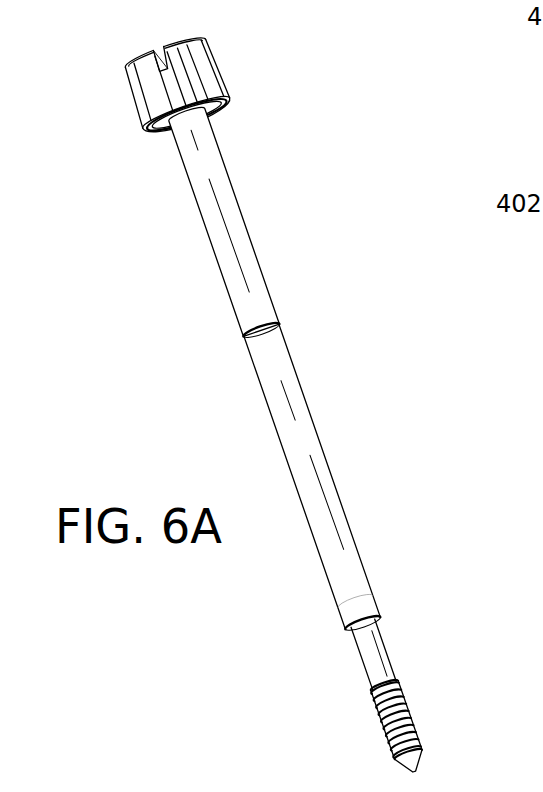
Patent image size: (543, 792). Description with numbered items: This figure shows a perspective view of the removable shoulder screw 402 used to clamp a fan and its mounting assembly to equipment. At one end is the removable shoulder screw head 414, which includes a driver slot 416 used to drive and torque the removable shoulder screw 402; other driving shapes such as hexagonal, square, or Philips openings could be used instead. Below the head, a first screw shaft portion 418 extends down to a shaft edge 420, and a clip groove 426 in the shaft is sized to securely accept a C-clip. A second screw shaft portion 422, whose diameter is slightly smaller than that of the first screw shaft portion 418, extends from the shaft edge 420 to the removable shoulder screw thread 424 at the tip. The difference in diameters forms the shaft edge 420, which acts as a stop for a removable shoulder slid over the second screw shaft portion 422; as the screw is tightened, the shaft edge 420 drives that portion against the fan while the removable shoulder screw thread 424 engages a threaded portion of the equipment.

The removable shoulder screw 402 is at (146, 246).
The removable shoulder screw head 414 is at (212, 80).
The driver slot 416 is at (158, 50).
The first screw shaft portion 418 is at (323, 470).
The shaft edge 420 is at (350, 627).
The second screw shaft portion 422 is at (386, 641).
The removable shoulder screw thread 424 is at (415, 724).
The clip groove 426 is at (281, 324).